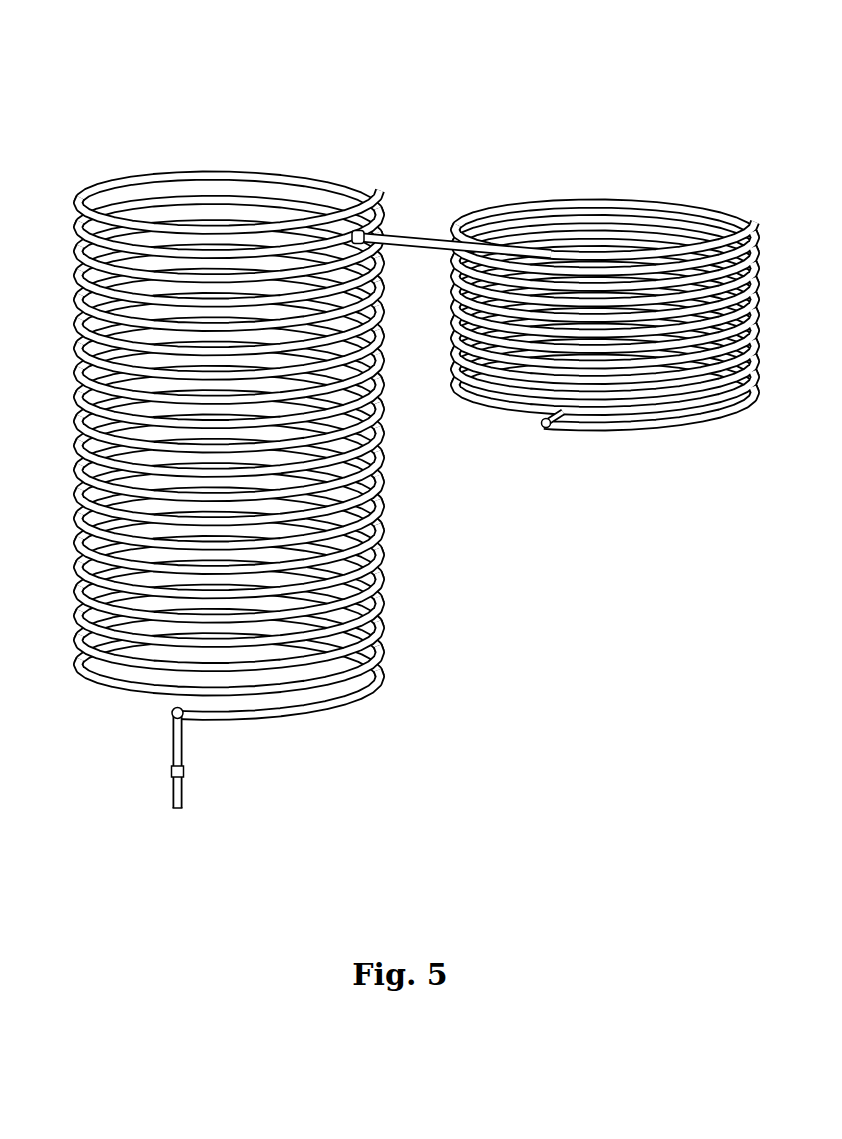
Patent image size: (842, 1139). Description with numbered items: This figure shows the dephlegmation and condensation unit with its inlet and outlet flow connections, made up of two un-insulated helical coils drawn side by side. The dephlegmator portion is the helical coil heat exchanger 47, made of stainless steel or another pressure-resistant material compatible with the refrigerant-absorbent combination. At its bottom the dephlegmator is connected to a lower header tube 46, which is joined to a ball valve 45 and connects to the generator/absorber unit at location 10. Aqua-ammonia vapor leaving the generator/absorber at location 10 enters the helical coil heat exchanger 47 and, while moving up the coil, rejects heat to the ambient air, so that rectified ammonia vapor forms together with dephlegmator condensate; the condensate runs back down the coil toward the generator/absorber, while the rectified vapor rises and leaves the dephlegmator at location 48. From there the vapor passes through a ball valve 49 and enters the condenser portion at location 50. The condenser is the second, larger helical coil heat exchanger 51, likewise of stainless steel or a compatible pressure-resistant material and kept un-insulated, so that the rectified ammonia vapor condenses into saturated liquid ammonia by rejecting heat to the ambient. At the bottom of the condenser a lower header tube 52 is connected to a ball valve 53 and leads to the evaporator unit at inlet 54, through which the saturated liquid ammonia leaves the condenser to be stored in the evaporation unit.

The location 10 is at (391, 461).
The ball valve 45 is at (560, 414).
The lower header tube 46 is at (547, 424).
The helical coil heat exchanger 47 is at (668, 200).
The location 48 is at (548, 250).
The ball valve 49 is at (360, 230).
The location 50 is at (175, 226).
The helical coil heat exchanger 51 is at (390, 588).
The lower header tube 52 is at (172, 748).
The ball valve 53 is at (183, 771).
The inlet 54 is at (180, 808).